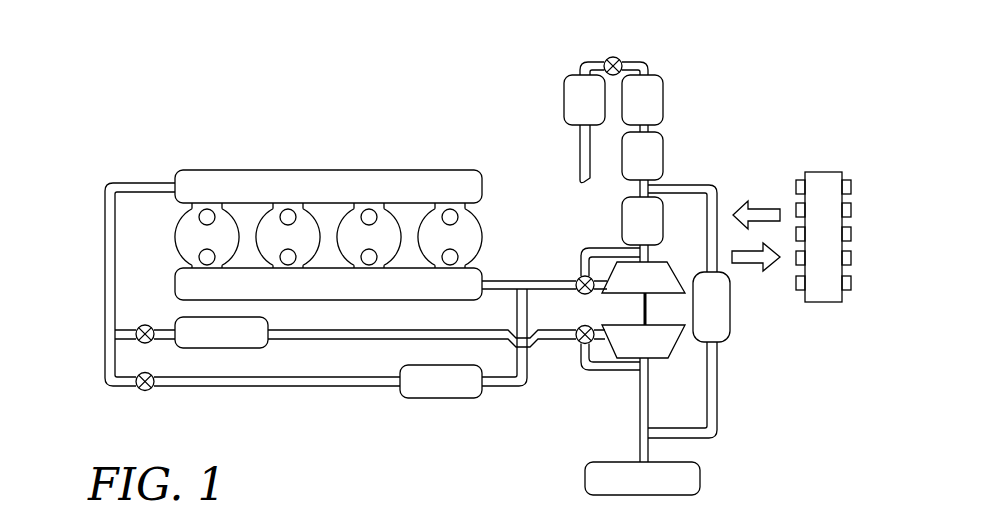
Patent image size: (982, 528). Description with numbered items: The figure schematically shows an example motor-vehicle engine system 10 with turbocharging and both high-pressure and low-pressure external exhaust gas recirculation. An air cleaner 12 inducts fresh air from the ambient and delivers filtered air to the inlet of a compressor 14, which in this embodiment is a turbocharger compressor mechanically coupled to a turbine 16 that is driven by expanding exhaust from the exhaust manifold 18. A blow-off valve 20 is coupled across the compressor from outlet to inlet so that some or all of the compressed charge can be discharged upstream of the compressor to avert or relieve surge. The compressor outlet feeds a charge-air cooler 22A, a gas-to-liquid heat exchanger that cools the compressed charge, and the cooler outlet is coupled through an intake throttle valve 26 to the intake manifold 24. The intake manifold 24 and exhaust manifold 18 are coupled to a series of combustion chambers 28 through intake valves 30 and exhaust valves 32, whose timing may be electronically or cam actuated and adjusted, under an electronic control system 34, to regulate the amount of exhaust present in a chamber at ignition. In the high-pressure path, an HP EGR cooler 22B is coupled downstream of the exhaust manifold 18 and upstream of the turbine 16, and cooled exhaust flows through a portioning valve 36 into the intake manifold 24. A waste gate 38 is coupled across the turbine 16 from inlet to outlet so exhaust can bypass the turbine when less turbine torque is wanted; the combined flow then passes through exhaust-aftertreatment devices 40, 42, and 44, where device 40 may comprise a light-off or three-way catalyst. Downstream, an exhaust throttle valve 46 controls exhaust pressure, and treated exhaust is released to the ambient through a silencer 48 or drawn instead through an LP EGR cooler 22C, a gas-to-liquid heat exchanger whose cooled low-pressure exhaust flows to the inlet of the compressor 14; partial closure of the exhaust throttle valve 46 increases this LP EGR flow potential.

The engine system 10 is at (108, 90).
The air cleaner 12 is at (642, 478).
The compressor 14 is at (643, 341).
The turbine 16 is at (643, 277).
The exhaust manifold 18 is at (328, 284).
The blow-off valve 20 is at (562, 334).
The charge-air cooler 22A is at (221, 332).
The HP EGR cooler 22B is at (441, 381).
The LP EGR cooler 22C is at (711, 307).
The intake manifold 24 is at (328, 186).
The intake throttle valve 26 is at (140, 326).
The combustion chambers 28 is at (515, 236).
The intake valves 30 is at (223, 232).
The exhaust valves 32 is at (451, 249).
The electronic control system 34 is at (791, 237).
The portioning valve 36 is at (150, 390).
The waste gate 38 is at (583, 293).
The exhaust-aftertreatment device 40 is at (642, 221).
The exhaust-aftertreatment device 42 is at (642, 156).
The exhaust-aftertreatment device 44 is at (642, 100).
The exhaust throttle valve 46 is at (619, 58).
The silencer 48 is at (584, 129).